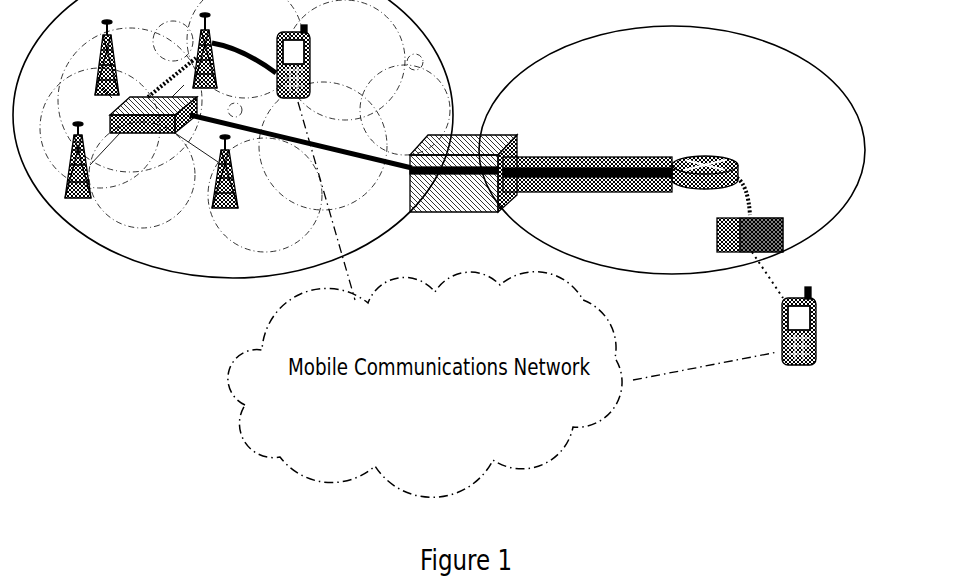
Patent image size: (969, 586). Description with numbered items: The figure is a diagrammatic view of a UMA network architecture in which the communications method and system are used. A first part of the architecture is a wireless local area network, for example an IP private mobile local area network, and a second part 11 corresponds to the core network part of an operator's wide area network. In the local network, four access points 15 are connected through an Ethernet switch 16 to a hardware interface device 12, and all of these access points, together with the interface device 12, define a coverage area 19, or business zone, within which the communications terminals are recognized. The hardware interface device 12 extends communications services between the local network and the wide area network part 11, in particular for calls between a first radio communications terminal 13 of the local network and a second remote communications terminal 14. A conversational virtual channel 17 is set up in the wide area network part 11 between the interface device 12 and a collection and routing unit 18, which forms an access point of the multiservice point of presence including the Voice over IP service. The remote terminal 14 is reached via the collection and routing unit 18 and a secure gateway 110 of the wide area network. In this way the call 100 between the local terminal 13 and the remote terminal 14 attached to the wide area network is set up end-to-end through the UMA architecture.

The second part 11 is at (713, 28).
The hardware interface device 12 is at (452, 198).
The first radio communications terminal 13 is at (312, 70).
The second remote communications terminal 14 is at (778, 337).
The access points 15 is at (173, 110).
The Ethernet switch 16 is at (140, 133).
The conversational virtual channel 17 is at (566, 157).
The collection and routing unit 18 is at (715, 160).
The coverage area 19 is at (308, 208).
The call 100 is at (257, 140).
The secure gateway 110 is at (772, 219).